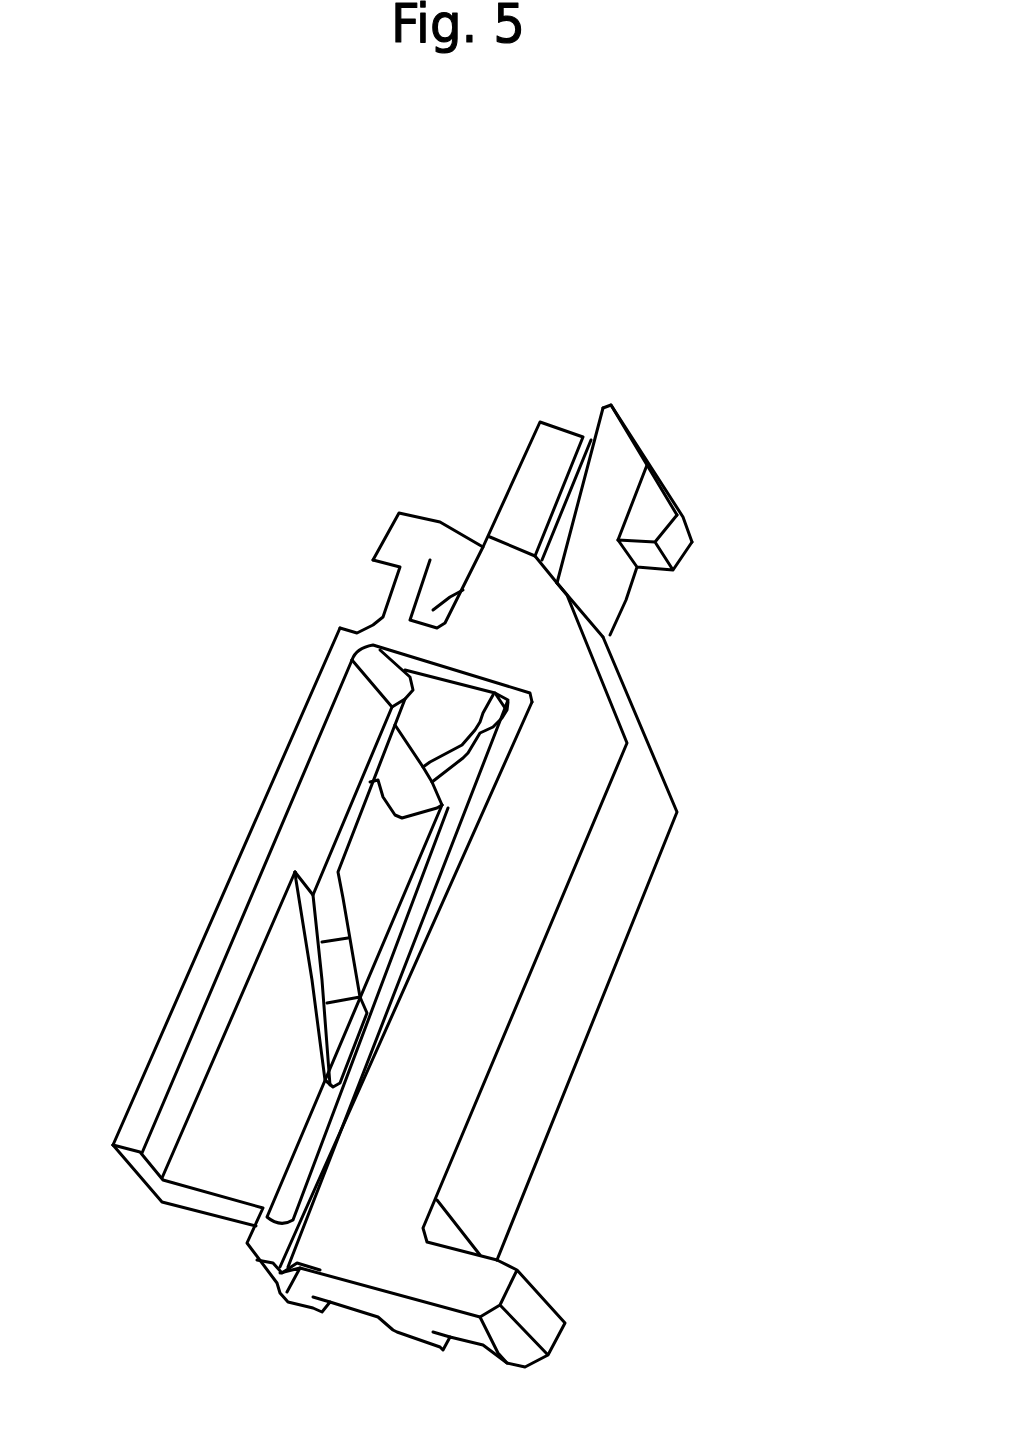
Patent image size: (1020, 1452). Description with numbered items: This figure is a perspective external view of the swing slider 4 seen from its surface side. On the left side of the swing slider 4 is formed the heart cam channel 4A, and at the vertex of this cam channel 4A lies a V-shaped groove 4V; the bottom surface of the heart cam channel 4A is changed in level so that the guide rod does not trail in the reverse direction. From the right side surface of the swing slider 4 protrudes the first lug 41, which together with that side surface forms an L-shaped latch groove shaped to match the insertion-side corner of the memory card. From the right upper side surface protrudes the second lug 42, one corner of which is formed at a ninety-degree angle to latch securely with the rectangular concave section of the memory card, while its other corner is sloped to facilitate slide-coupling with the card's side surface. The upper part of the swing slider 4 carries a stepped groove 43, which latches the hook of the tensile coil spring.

The swing slider 4 is at (168, 620).
The first lug 41 is at (540, 1302).
The second lug 42 is at (673, 532).
The stepped groove 43 is at (437, 623).
The heart cam channel 4A is at (385, 967).
The V-shaped groove 4V is at (415, 798).